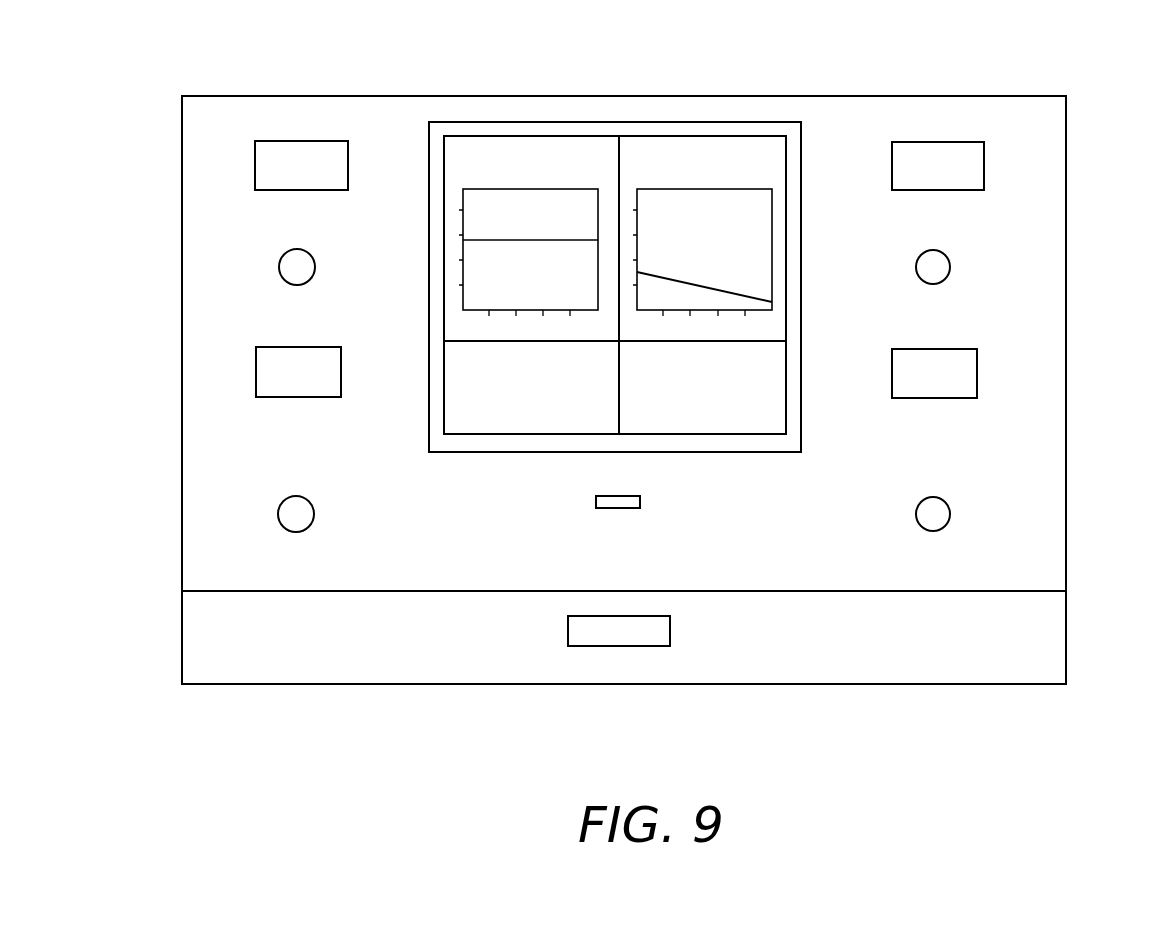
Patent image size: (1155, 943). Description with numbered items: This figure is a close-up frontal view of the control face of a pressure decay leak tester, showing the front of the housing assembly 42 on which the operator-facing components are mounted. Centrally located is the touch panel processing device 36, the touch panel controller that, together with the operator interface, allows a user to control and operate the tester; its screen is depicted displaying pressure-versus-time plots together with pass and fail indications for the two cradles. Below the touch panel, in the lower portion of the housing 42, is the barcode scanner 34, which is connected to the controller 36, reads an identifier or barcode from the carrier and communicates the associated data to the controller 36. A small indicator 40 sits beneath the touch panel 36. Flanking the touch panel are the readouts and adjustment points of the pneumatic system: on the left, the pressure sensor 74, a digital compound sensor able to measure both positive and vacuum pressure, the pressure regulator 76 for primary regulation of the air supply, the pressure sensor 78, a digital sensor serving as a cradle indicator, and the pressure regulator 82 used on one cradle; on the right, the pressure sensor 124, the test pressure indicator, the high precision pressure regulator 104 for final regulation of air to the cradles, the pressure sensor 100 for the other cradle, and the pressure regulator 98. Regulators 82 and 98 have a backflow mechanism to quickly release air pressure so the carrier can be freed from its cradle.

The barcode scanner 34 is at (606, 645).
The touch panel processing device 36 is at (724, 128).
The indicator light 40 is at (596, 502).
The housing assembly 42 is at (883, 662).
The pressure sensor 74 is at (255, 165).
The pressure regulator 76 is at (279, 265).
The pressure sensor 78 is at (256, 367).
The pressure regulator 82 is at (278, 512).
The pressure regulator 98 is at (950, 514).
The pressure sensor 100 is at (977, 370).
The pressure regulator 104 is at (950, 263).
The pressure sensor 124 is at (984, 162).